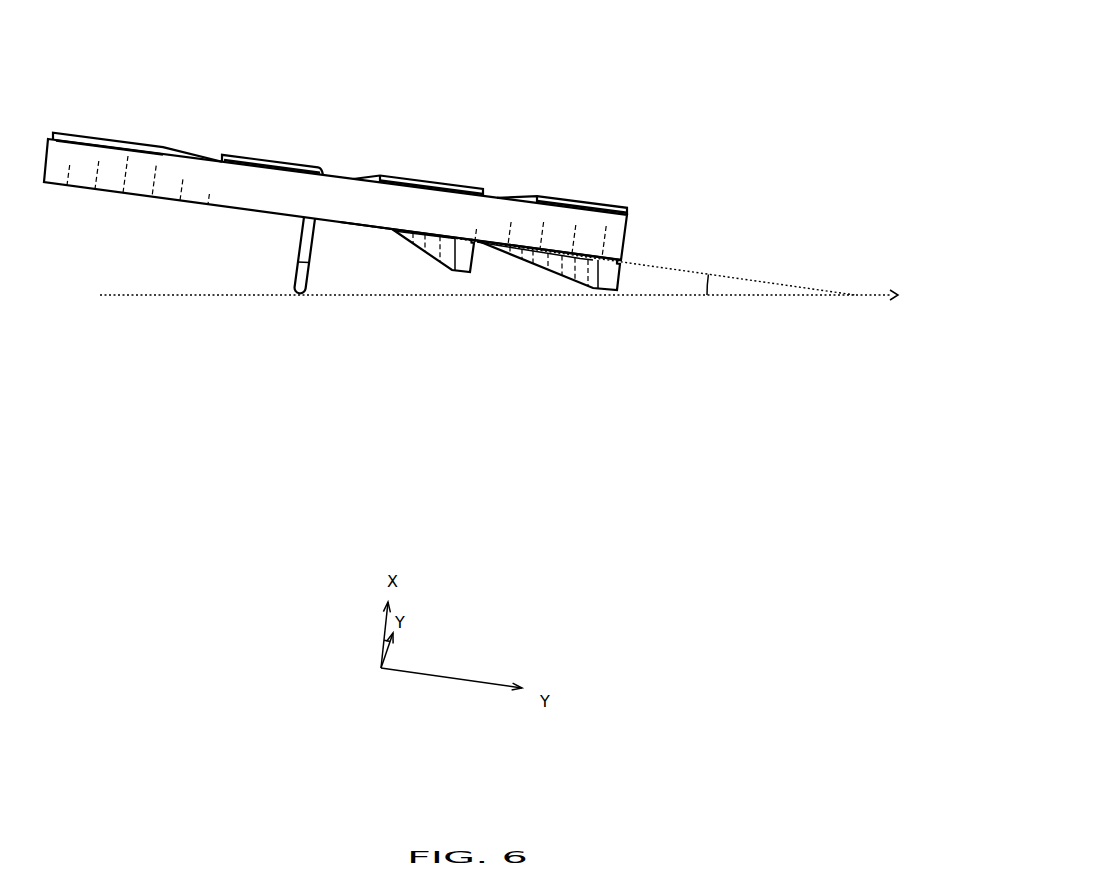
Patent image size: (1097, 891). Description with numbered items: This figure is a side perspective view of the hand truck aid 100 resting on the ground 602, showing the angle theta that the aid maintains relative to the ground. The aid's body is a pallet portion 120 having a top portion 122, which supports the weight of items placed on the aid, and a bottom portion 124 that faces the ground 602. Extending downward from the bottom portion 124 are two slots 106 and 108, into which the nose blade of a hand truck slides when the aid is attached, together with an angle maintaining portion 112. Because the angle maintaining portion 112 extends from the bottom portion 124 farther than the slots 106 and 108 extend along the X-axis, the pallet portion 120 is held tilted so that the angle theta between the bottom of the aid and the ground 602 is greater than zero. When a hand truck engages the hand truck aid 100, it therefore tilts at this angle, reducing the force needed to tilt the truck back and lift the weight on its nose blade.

The hand truck aid 100 is at (692, 87).
The slot 106 is at (597, 260).
The slot 108 is at (474, 243).
The angle maintaining portion 112 is at (310, 262).
The pallet portion 120 is at (98, 134).
The top portion 122 is at (442, 178).
The bottom portion 124 is at (372, 230).
The ground 602 is at (531, 270).